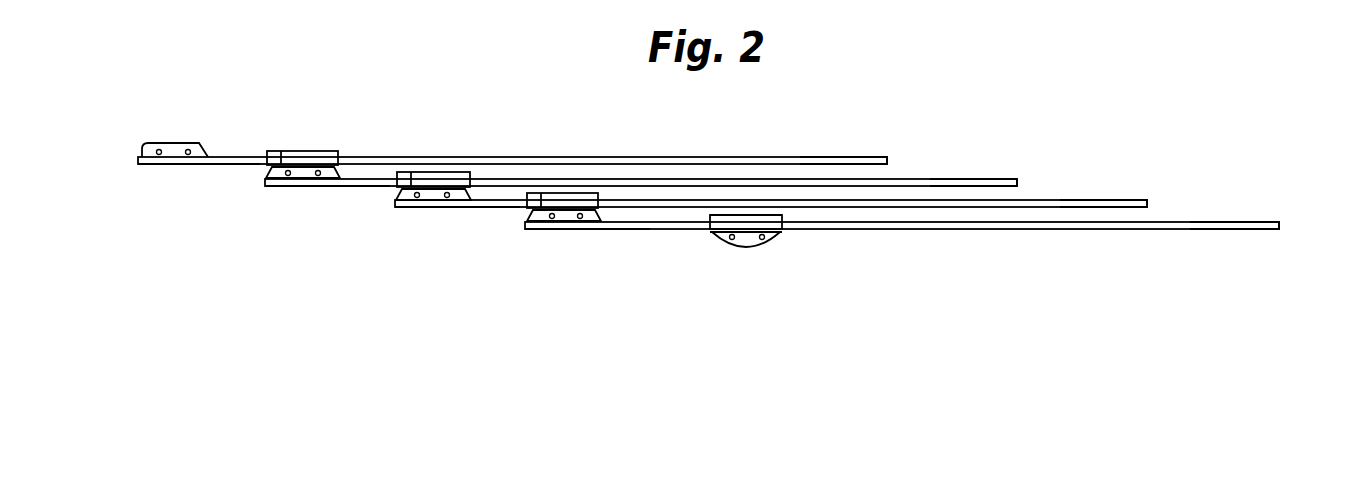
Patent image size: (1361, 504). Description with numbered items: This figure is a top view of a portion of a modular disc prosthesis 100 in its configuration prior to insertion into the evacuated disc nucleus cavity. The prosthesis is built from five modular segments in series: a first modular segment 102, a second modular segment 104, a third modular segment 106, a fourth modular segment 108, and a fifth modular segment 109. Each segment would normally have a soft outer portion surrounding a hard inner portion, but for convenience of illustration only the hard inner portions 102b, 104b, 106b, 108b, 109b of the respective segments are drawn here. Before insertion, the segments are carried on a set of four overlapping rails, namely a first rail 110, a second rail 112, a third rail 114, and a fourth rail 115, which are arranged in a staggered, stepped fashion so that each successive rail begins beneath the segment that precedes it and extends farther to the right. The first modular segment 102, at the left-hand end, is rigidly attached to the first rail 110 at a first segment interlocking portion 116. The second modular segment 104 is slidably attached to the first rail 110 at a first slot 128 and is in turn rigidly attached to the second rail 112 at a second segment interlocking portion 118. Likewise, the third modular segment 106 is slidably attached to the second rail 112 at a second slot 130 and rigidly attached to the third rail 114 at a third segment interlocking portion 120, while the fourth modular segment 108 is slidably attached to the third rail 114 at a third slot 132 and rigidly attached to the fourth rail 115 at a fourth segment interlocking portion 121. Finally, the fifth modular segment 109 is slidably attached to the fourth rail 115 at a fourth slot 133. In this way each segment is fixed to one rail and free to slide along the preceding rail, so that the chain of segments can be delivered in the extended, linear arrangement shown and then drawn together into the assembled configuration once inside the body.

The modular disc prosthesis 100 is at (122, 107).
The first modular segment 102 is at (143, 148).
The hard inner portion of first modular segment 102b is at (190, 143).
The second modular segment 104 is at (338, 152).
The hard inner portion of second modular segment 104b is at (322, 150).
The third modular segment 106 is at (397, 195).
The hard inner portion of third modular segment 106b is at (420, 210).
The fourth modular segment 108 is at (527, 212).
The hard inner portion of fourth modular segment 108b is at (560, 229).
The fifth modular segment 109 is at (775, 232).
The hard inner portion of fifth modular segment 109b is at (752, 248).
The first rail 110 is at (858, 157).
The second rail 112 is at (993, 180).
The third rail 114 is at (1135, 200).
The fourth rail 115 is at (1270, 223).
The first segment interlocking portion 116 is at (167, 165).
The second segment interlocking portion 118 is at (287, 186).
The third segment interlocking portion 120 is at (403, 208).
The fourth segment interlocking portion 121 is at (585, 230).
The first slot 128 is at (292, 150).
The second slot 130 is at (455, 175).
The third slot 132 is at (575, 197).
The fourth slot 133 is at (722, 212).